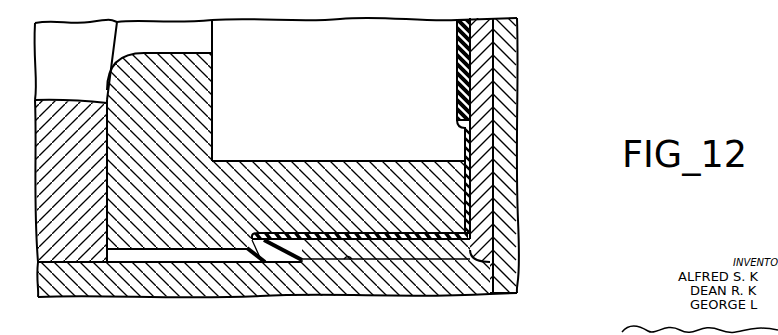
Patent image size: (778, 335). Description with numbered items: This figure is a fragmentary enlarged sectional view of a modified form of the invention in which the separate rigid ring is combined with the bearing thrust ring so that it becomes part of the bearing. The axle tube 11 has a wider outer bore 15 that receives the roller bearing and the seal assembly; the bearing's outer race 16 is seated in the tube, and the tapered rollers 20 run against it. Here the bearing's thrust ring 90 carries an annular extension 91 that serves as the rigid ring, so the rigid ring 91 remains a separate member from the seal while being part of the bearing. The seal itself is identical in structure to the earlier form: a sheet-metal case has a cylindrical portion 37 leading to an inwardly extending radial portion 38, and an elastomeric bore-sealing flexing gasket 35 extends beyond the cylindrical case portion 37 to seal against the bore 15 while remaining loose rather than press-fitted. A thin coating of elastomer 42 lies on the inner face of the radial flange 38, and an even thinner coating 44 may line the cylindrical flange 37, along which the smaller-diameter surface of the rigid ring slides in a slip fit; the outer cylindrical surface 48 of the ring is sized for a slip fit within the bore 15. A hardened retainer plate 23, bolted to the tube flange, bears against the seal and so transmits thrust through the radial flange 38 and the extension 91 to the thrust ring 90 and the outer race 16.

The axle tube 11 is at (353, 297).
The outer bore 15 is at (348, 259).
The outer race 16 is at (100, 191).
The tapered rollers 20 is at (90, 77).
The retainer plate 23 is at (519, 168).
The bore-sealing flexing gasket 35 is at (273, 259).
The cylindrical portion 37 is at (430, 259).
The radial portion 38 is at (478, 73).
The thin coating of elastomer 42 is at (462, 113).
The thinner coating 44 is at (375, 232).
The outer cylindrical surface 48 is at (201, 250).
The thrust ring 90 is at (216, 80).
The annular extension 91 is at (288, 166).